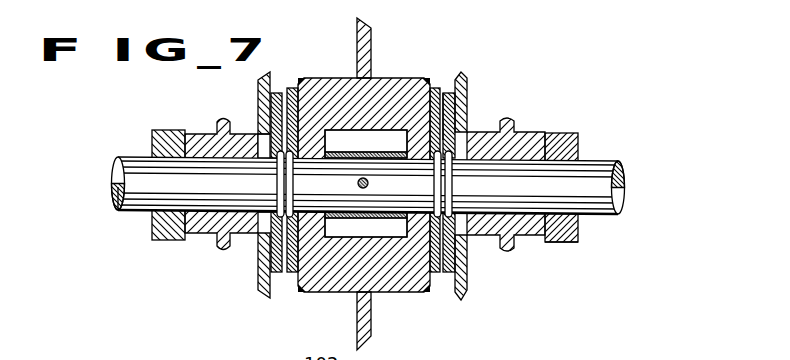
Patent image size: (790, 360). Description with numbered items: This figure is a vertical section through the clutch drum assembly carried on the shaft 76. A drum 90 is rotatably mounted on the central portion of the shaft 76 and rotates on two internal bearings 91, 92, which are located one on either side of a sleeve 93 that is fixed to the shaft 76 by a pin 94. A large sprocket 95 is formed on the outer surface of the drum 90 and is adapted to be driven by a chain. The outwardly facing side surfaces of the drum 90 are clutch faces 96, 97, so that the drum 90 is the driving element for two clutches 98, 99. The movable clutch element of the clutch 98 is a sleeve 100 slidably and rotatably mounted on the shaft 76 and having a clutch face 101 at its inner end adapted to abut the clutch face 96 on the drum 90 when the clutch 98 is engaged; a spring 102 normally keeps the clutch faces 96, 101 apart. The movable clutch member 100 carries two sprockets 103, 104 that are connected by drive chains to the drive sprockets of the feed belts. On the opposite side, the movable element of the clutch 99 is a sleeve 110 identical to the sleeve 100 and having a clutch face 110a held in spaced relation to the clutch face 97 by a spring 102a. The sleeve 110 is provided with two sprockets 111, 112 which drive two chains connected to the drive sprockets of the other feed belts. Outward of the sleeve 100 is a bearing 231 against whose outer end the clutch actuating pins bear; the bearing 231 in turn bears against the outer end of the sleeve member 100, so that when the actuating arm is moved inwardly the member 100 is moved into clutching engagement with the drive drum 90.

The shaft 76 is at (600, 162).
The drum 90 is at (378, 82).
The internal bearing 91 is at (321, 230).
The internal bearing 92 is at (413, 137).
The sleeve 93 is at (362, 153).
The pin 94 is at (357, 183).
The large sprocket 95 is at (367, 37).
The clutch face 96 is at (441, 87).
The clutch face 97 is at (286, 89).
The clutch 98 is at (456, 87).
The clutch 99 is at (263, 79).
The sleeve 100 is at (530, 142).
The clutch face 101 is at (447, 110).
The spring 102 is at (453, 181).
The spring 102a is at (276, 192).
The sprocket 103 is at (464, 72).
The sprocket 104 is at (515, 123).
The sleeve 110 is at (197, 134).
The clutch face 110a is at (277, 273).
The sprocket 111 is at (271, 95).
The sprocket 112 is at (222, 118).
The bearing 231 is at (548, 242).